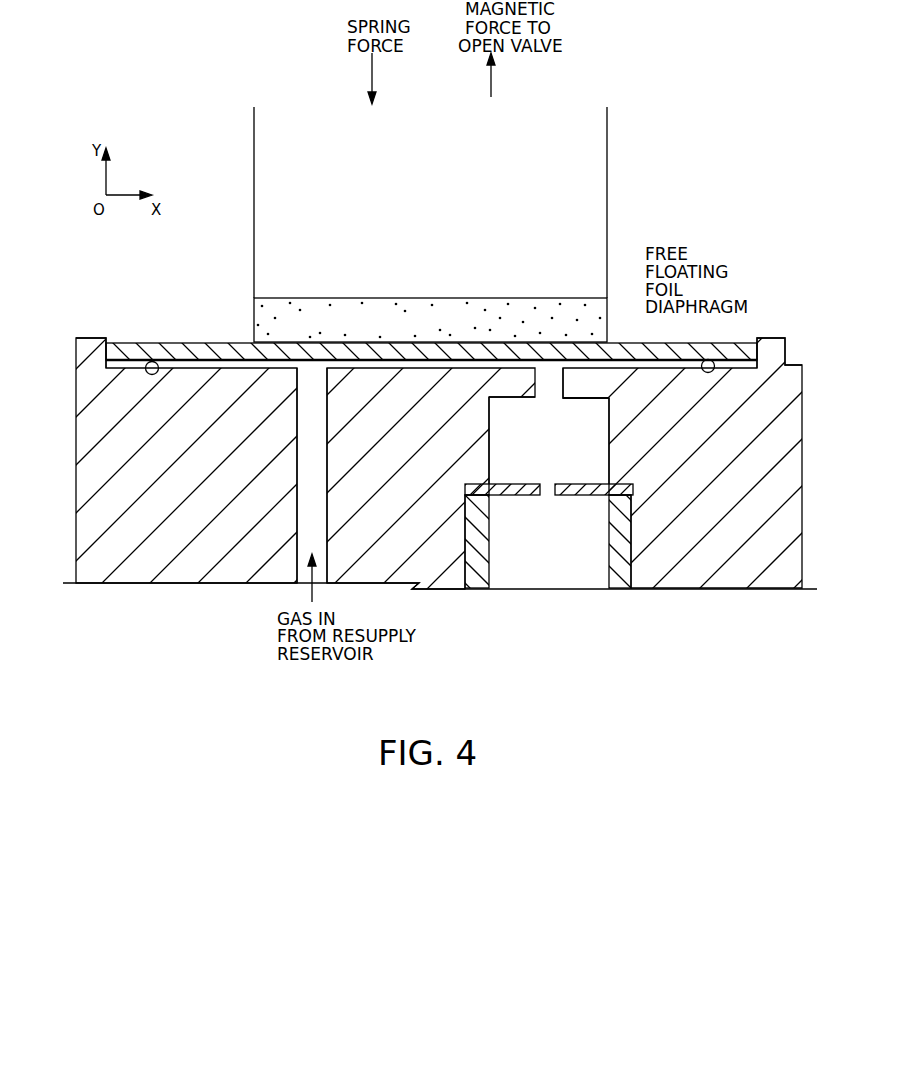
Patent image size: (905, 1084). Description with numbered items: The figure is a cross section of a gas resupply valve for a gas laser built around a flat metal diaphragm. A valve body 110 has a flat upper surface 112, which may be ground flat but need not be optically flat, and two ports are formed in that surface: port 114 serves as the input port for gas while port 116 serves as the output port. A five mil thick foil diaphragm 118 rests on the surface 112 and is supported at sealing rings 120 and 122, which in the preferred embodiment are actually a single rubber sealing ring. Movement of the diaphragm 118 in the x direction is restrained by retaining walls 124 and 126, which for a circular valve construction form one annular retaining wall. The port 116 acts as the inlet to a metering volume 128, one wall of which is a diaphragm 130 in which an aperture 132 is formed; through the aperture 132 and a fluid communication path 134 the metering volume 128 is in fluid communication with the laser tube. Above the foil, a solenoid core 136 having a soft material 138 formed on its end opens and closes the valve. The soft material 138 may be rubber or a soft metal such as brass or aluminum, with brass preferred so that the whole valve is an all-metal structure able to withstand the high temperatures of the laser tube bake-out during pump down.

The valve body 110 is at (724, 574).
The flat upper surface 112 is at (207, 372).
The port 114 is at (308, 388).
The port 116 is at (552, 382).
The foil diaphragm 118 is at (225, 342).
The sealing ring 120 is at (150, 375).
The sealing ring 122 is at (711, 374).
The retaining wall 124 is at (770, 338).
The retaining wall 126 is at (100, 337).
The metering volume 128 is at (555, 443).
The diaphragm 130 is at (538, 484).
The aperture 132 is at (547, 485).
The fluid communication path 134 is at (553, 580).
The solenoid core 136 is at (435, 272).
The soft material 138 is at (572, 308).